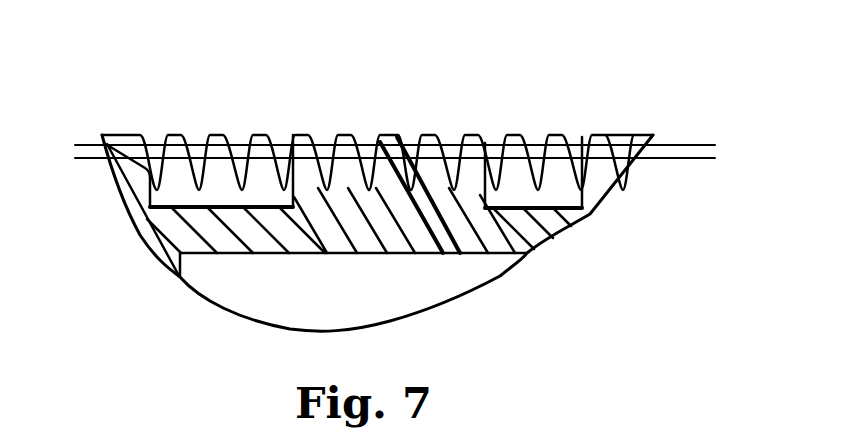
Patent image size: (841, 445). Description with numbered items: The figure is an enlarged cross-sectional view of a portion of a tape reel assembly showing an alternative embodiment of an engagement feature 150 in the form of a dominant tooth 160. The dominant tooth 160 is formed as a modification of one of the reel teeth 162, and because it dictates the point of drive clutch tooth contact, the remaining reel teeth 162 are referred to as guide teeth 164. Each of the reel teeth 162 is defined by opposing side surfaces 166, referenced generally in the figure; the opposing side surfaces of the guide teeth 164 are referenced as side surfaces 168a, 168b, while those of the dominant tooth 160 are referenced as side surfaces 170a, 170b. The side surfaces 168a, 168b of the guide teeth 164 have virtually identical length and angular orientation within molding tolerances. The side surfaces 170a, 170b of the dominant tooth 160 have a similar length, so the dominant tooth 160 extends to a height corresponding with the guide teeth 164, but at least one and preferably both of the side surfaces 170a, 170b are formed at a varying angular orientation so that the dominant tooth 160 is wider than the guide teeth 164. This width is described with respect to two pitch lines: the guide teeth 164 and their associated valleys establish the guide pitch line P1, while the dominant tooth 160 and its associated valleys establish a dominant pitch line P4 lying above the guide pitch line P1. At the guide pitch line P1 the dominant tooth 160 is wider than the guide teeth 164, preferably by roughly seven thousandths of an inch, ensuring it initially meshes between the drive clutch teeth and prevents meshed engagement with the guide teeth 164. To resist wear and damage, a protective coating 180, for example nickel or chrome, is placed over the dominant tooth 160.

The engagement feature 150 is at (394, 84).
The dominant tooth 160 is at (372, 172).
The reel teeth 162 is at (620, 132).
The guide teeth 164 is at (215, 182).
The opposing side surfaces 166 is at (233, 143).
The side surface of guide tooth 168a is at (581, 208).
The side surface of guide tooth 168b is at (613, 164).
The side surface of dominant tooth 170a is at (392, 182).
The side surface of dominant tooth 170b is at (407, 172).
The protective coating 180 is at (405, 147).
The dominant pitch line P4 is at (692, 144).
The guide pitch line P1 is at (705, 160).